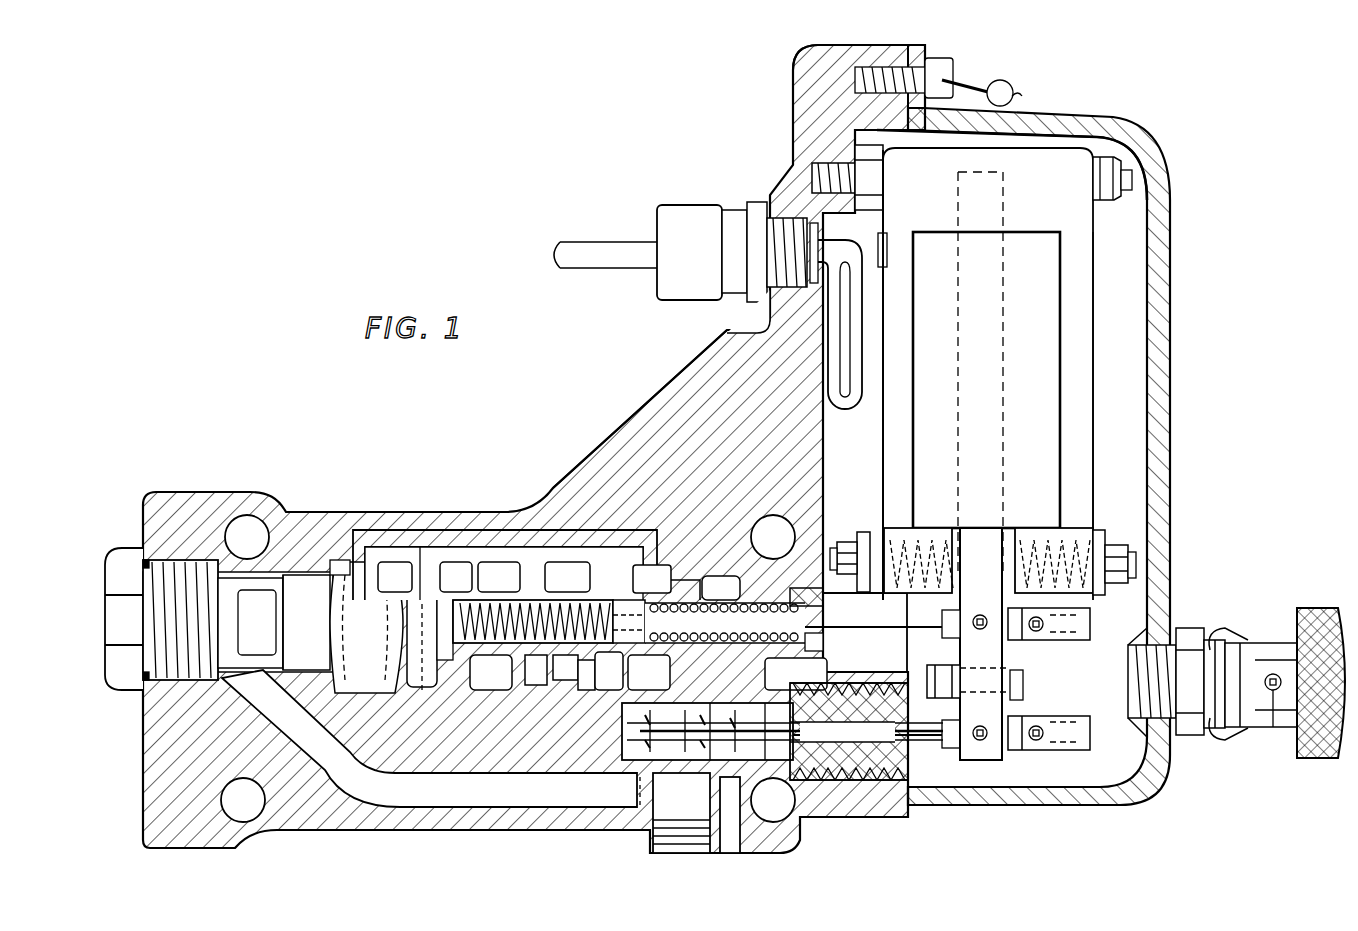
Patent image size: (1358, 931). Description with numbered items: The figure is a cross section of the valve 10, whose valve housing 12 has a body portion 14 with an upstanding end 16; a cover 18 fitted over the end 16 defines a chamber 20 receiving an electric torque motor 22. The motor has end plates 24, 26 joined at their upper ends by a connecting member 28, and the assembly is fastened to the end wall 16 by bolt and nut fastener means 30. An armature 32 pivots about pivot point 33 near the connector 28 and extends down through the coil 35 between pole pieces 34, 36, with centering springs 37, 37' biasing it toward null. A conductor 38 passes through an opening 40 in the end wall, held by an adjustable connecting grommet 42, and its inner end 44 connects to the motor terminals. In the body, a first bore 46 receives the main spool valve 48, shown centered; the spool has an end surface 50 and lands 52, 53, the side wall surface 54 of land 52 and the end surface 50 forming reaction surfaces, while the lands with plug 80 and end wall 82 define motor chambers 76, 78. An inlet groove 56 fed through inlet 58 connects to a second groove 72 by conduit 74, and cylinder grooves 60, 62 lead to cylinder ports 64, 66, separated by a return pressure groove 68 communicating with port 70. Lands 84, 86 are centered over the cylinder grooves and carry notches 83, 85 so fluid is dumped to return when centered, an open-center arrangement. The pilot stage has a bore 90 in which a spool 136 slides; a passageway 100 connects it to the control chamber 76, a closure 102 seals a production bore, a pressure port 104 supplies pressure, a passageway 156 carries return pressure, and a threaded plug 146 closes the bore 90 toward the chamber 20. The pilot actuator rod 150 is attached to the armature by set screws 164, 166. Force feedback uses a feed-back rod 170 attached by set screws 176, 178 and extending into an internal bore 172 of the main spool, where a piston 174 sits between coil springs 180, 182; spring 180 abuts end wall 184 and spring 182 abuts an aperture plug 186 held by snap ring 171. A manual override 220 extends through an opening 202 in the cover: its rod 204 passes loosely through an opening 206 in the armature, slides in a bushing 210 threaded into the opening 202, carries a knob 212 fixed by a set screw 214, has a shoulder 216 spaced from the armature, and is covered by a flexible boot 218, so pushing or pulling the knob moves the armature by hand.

The valve 10 is at (578, 414).
The valve housing 12 is at (661, 380).
The body portion 14 is at (598, 470).
The upstanding end 16 is at (800, 98).
The cover 18 is at (1172, 262).
The chamber 20 is at (1133, 344).
The electric torque motor 22 is at (1083, 296).
The end plate 24 is at (883, 452).
The end plate 26 is at (1080, 454).
The connecting member 28 is at (1030, 160).
The bolt and nut fastener means 30 is at (1118, 195).
The armature 32 is at (981, 644).
The pivot point 33 is at (1008, 193).
The pole piece 34 is at (935, 542).
The coil 35 is at (1032, 388).
The pole piece 36 is at (1043, 542).
The centering spring 37 is at (858, 541).
The centering spring 37' is at (1109, 549).
The conductor 38 is at (618, 255).
The opening 40 is at (790, 222).
The adjustable connecting grommet 42 is at (742, 280).
The inner end of conductor 44 is at (880, 240).
The first bore 46 is at (262, 580).
The main spool valve 48 is at (314, 570).
The end surface 50 is at (232, 617).
The land 52 is at (306, 622).
The spool land 53 is at (690, 585).
The side wall surface 54 is at (268, 668).
The first inlet groove 56 is at (337, 672).
The inlet 58 is at (375, 693).
The cylinder groove 60 is at (418, 687).
The cylinder groove 62 is at (565, 680).
The cylinder port 64 is at (426, 690).
The cylinder port 66 is at (590, 690).
The return pressure groove 68 is at (490, 690).
The port 70 is at (535, 685).
The second groove 72 is at (660, 578).
The conduit 74 is at (480, 540).
The motor chamber 76 is at (222, 678).
The motor chamber 78 is at (752, 535).
The plug 80 is at (118, 548).
The end wall 82 is at (728, 590).
The notch 83 is at (398, 578).
The land 84 is at (420, 547).
The notch 85 is at (528, 578).
The land 86 is at (570, 600).
The bore 90 is at (630, 731).
The passageway 100 is at (468, 810).
The closure 102 is at (682, 845).
The pressure port 104 is at (733, 853).
The spool 136 is at (628, 742).
The threaded plug 146 is at (905, 775).
The actuator rod 150 is at (925, 738).
The passageway 156 is at (626, 790).
The set screw 164 is at (982, 762).
The set screw 166 is at (1036, 740).
The feed-back rod 170 is at (875, 630).
The snap ring 171 is at (824, 645).
The internal bore 172 is at (790, 603).
The piston 174 is at (649, 672).
The set screw 176 is at (980, 615).
The set screw 178 is at (1036, 632).
The coil spring 180 is at (608, 665).
The coil spring 182 is at (796, 673).
The end wall 184 is at (450, 665).
The aperture plug 186 is at (828, 605).
The opening 202 is at (1150, 640).
The rod 204 is at (1005, 682).
The opening 206 is at (983, 718).
The bushing 210 is at (1182, 738).
The knob 212 is at (1318, 600).
The set screw 214 is at (1273, 728).
The shoulder 216 is at (1015, 688).
The flexible boot 218 is at (1265, 643).
The manual override 220 is at (1237, 617).